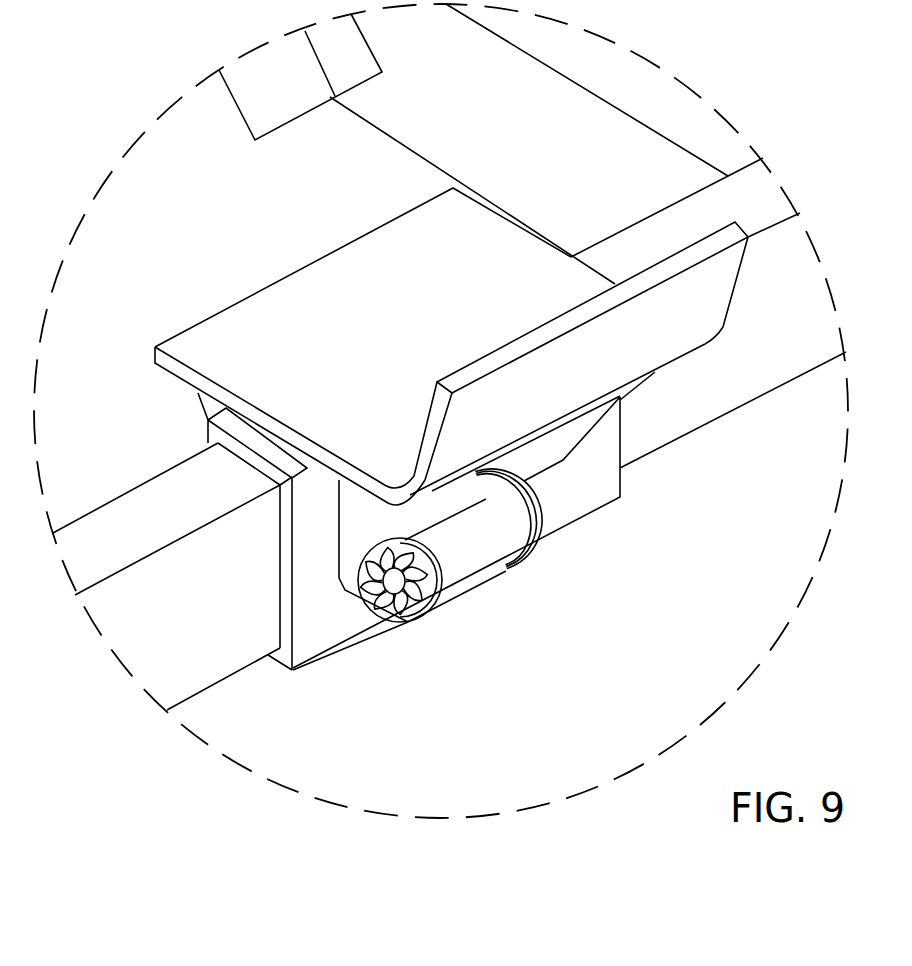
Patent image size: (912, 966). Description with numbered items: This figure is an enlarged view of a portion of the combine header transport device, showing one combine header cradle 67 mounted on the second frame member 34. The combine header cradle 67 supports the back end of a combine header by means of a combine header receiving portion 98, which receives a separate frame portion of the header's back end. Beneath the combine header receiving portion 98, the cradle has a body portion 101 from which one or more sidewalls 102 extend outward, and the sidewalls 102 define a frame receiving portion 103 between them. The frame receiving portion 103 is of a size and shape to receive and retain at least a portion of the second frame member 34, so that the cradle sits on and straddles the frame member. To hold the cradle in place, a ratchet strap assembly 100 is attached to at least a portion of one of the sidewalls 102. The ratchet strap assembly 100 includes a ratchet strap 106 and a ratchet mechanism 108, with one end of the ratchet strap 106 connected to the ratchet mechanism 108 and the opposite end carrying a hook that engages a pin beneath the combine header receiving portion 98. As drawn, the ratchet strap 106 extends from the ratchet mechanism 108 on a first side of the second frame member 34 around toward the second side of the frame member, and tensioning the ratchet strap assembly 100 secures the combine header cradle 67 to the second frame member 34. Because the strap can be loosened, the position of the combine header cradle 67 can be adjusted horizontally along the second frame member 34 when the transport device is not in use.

The second frame member 34 is at (765, 350).
The combine header cradle 67 is at (677, 320).
The combine header receiving portion 98 is at (200, 346).
The ratchet strap assembly 100 is at (543, 513).
The body portion 101 is at (254, 437).
The sidewall 102 is at (595, 485).
The frame receiving portion 103 is at (282, 510).
The ratchet strap 106 is at (377, 643).
The ratchet mechanism 108 is at (343, 593).